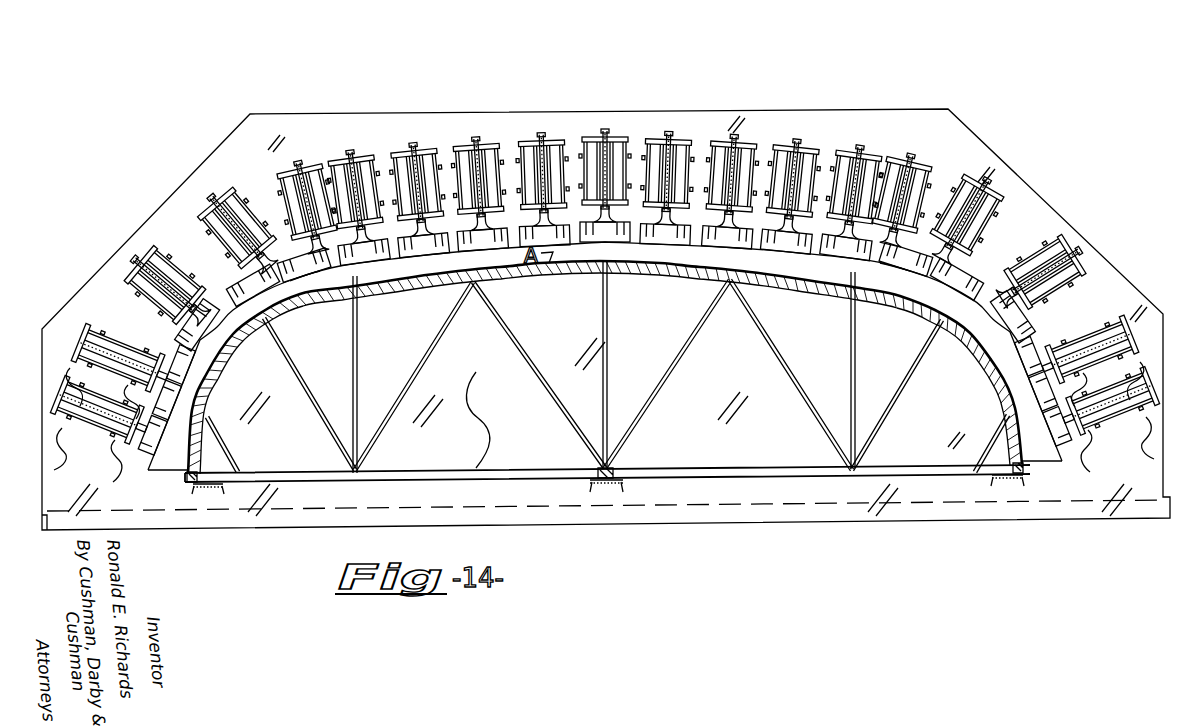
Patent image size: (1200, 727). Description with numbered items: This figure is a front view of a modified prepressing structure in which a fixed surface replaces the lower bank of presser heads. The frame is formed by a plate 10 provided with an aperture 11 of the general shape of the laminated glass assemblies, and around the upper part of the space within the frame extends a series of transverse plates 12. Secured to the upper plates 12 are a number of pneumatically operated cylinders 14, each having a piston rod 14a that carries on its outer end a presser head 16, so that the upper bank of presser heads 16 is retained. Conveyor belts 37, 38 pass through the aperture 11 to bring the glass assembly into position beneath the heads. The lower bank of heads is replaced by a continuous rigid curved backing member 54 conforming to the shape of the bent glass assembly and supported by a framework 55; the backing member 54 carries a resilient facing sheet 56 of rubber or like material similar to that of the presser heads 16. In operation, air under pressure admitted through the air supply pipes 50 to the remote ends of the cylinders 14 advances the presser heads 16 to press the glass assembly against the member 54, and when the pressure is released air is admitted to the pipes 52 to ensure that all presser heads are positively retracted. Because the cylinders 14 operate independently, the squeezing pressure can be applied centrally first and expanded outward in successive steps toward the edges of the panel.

The plate 10 is at (1017, 197).
The aperture 11 is at (178, 457).
The transverse plate 12 is at (609, 260).
The pneumatically operated cylinder 14 is at (104, 332).
The piston rod 14a is at (181, 347).
The presser head 16 is at (703, 238).
The conveyor belt 37 is at (890, 290).
The conveyor belt 38 is at (301, 293).
The air supply pipe 50 is at (63, 448).
The air pipe 52 is at (170, 470).
The backing member 54 is at (664, 277).
The framework 55 is at (510, 338).
The resilient facing sheet 56 is at (398, 274).